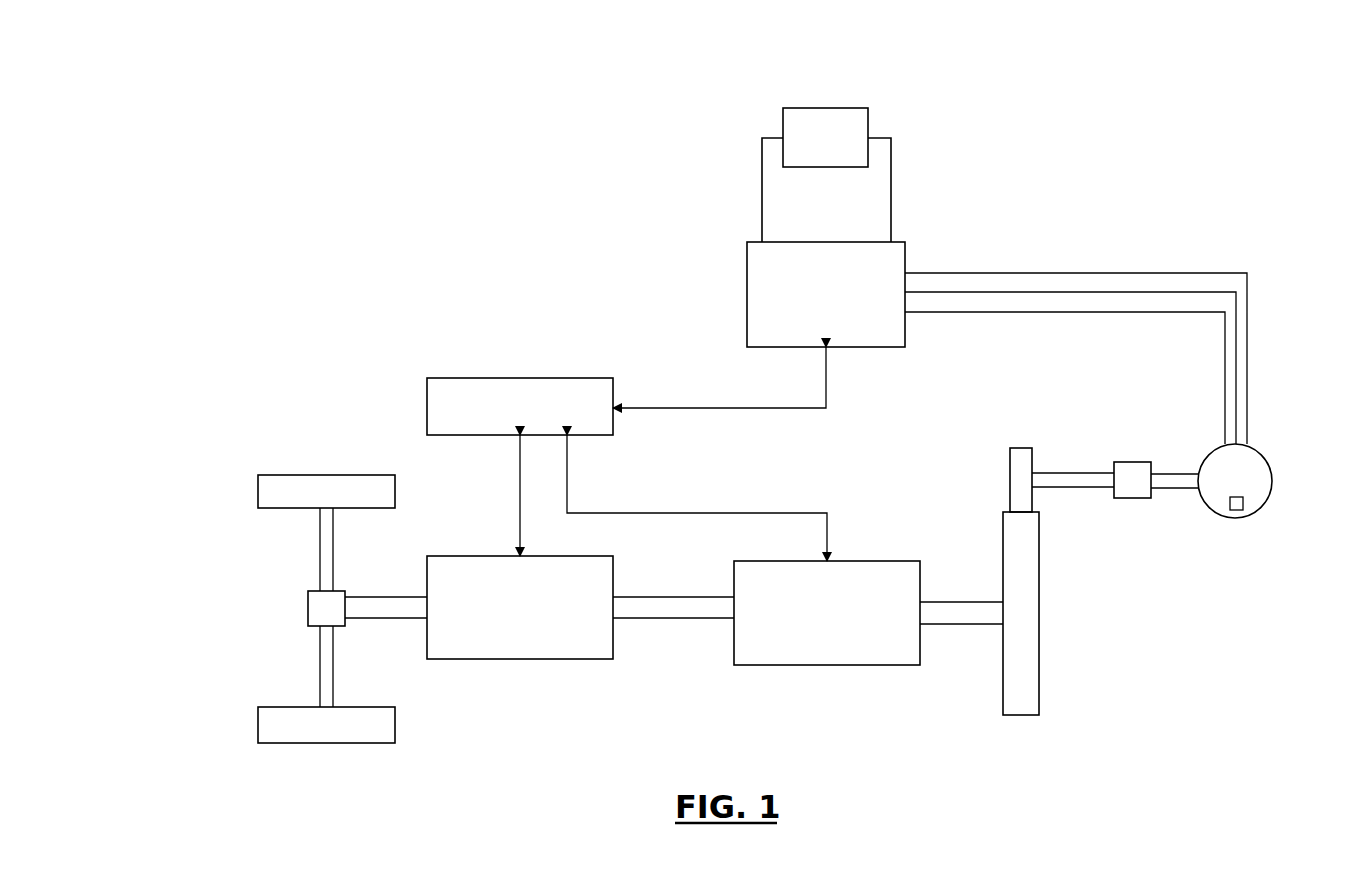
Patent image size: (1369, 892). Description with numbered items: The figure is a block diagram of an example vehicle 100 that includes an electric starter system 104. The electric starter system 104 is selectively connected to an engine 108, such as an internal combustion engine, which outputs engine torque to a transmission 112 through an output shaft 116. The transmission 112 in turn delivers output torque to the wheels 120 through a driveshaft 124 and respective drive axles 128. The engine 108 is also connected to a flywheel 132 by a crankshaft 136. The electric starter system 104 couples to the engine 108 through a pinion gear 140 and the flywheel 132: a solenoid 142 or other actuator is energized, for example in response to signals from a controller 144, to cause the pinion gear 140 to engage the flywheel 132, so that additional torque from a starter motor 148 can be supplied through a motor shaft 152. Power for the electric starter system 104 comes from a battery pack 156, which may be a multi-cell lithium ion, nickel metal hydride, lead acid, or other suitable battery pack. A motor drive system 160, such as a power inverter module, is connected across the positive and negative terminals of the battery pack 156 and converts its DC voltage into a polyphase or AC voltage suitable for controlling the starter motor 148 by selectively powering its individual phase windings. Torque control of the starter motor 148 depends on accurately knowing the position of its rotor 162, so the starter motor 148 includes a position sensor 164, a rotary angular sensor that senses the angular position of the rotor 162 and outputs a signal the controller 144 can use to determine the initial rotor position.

The vehicle 100 is at (145, 194).
The electric starter system 104 is at (1220, 204).
The engine 108 is at (830, 665).
The transmission 112 is at (522, 659).
The output shaft 116 is at (660, 620).
The wheels 120 is at (295, 475).
The driveshaft 124 is at (372, 620).
The drive axles 128 is at (320, 553).
The flywheel 132 is at (1039, 613).
The crankshaft 136 is at (960, 600).
The pinion gear 140 is at (1010, 478).
The solenoid 142 is at (1128, 498).
The controller 144 is at (445, 378).
The starter motor 148 is at (1266, 458).
The motor shaft 152 is at (1070, 472).
The battery pack 156 is at (824, 108).
The motor drive system 160 is at (747, 292).
The rotor 162 is at (1175, 488).
The position sensor 164 is at (1246, 507).